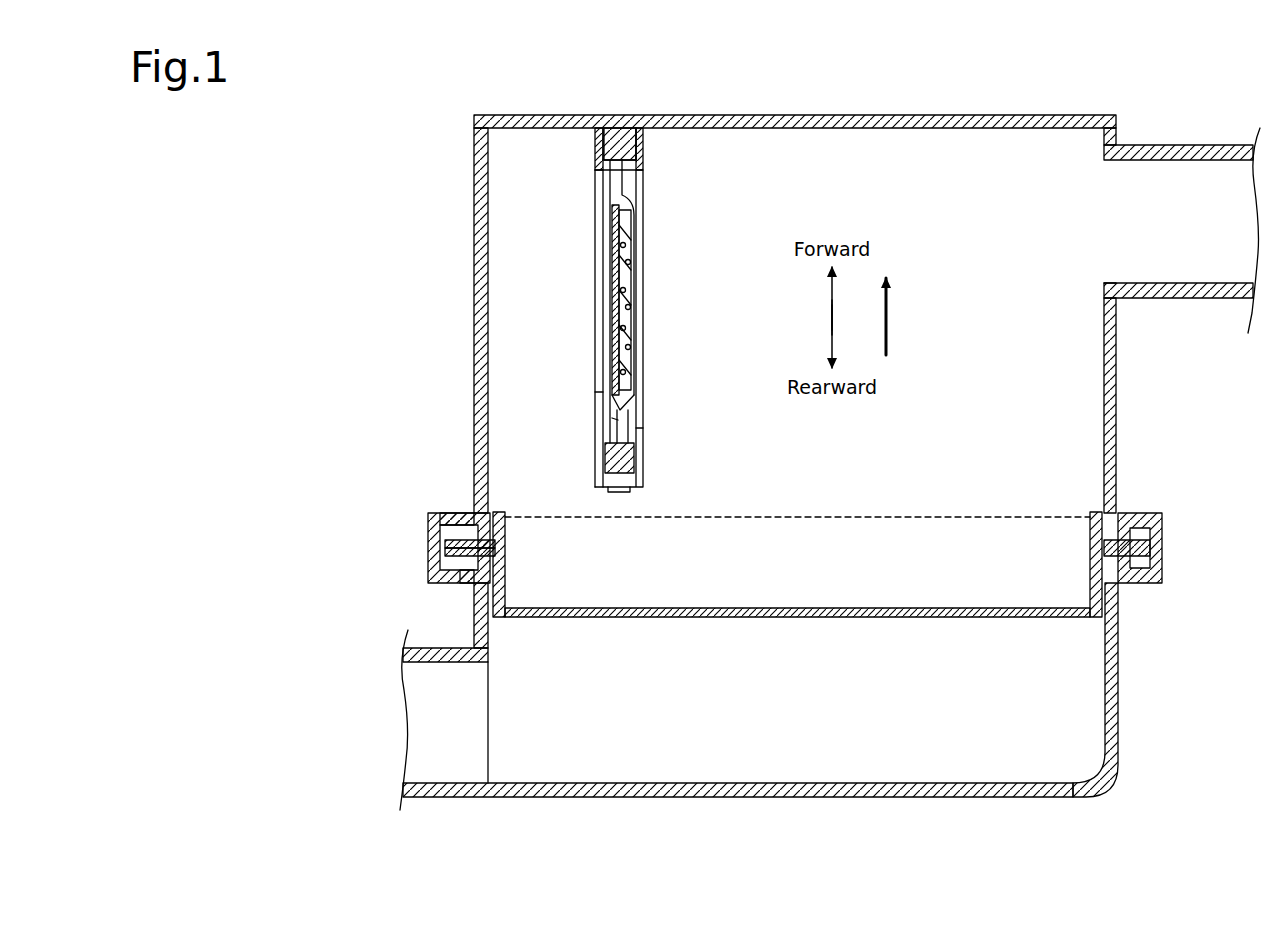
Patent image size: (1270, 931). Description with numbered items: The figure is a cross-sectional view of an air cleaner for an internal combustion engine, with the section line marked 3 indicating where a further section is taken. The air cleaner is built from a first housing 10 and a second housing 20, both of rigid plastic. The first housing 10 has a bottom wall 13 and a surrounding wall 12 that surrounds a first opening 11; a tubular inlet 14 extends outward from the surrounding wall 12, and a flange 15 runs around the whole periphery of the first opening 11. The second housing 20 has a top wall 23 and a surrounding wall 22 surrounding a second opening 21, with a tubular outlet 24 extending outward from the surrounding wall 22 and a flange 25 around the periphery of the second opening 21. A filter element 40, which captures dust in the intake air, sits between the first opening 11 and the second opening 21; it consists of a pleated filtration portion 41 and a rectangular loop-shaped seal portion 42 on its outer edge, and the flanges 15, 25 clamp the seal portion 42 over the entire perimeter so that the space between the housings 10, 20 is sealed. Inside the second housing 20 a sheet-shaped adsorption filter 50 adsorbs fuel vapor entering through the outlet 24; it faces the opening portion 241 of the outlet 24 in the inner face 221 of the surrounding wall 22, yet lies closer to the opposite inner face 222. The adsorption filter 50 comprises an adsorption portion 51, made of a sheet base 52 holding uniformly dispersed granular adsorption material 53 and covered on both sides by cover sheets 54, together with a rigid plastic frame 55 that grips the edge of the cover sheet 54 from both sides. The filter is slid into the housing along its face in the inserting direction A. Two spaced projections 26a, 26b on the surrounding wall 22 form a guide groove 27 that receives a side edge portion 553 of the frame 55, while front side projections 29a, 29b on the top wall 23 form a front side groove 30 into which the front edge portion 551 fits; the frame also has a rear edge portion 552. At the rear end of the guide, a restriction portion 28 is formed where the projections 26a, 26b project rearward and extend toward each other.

The first housing 10 is at (818, 699).
The first opening 11 is at (495, 566).
The surrounding wall 12 is at (1120, 692).
The bottom wall 13 is at (640, 798).
The tubular inlet 14 is at (450, 798).
The flange 15 is at (461, 584).
The second housing 20 is at (849, 309).
The second opening 21 is at (505, 534).
The surrounding wall 22 is at (1100, 320).
The inner face 221 is at (1103, 420).
The inner face 222 is at (490, 203).
The top wall 23 is at (713, 115).
The tubular outlet 24 is at (1214, 146).
The opening portion 241 is at (1104, 290).
The flange 25 is at (464, 513).
The projection 26a is at (640, 428).
The projection 26b is at (595, 390).
The guide groove 27 is at (612, 418).
The restriction portion 28 is at (611, 490).
The front side projection 29a is at (645, 154).
The front side projection 29b is at (594, 155).
The front side groove 30 is at (597, 140).
The filter element 40 is at (797, 561).
The filtration portion 41 is at (873, 620).
The seal portion 42 is at (430, 542).
The adsorption filter 50 is at (689, 301).
The adsorption portion 51 is at (689, 301).
The sheet base 52 is at (620, 318).
The granular adsorption material 53 is at (632, 280).
The cover sheet 54 is at (722, 340).
The frame 55 is at (643, 270).
The front edge portion 551 is at (618, 136).
The lower seal portion 552 is at (633, 455).
The side edge portion 553 is at (606, 302).
The section line of FIG. 3 is at (797, 97).
The inserting direction A is at (888, 326).